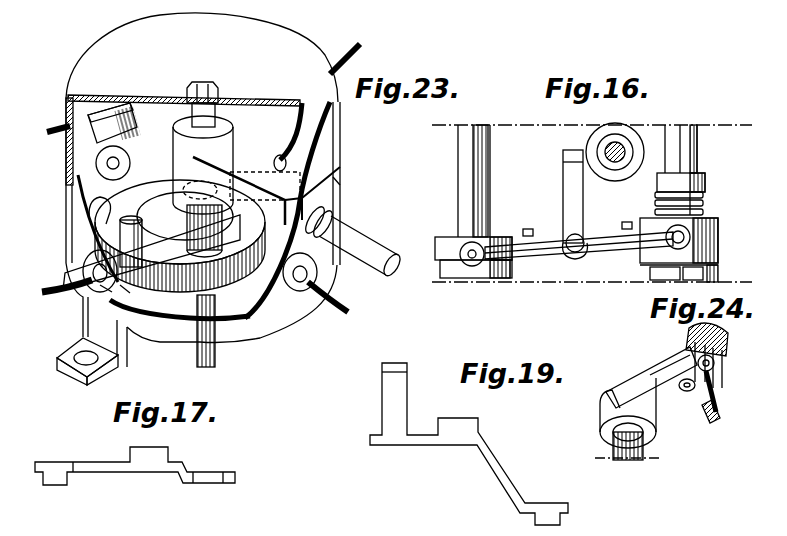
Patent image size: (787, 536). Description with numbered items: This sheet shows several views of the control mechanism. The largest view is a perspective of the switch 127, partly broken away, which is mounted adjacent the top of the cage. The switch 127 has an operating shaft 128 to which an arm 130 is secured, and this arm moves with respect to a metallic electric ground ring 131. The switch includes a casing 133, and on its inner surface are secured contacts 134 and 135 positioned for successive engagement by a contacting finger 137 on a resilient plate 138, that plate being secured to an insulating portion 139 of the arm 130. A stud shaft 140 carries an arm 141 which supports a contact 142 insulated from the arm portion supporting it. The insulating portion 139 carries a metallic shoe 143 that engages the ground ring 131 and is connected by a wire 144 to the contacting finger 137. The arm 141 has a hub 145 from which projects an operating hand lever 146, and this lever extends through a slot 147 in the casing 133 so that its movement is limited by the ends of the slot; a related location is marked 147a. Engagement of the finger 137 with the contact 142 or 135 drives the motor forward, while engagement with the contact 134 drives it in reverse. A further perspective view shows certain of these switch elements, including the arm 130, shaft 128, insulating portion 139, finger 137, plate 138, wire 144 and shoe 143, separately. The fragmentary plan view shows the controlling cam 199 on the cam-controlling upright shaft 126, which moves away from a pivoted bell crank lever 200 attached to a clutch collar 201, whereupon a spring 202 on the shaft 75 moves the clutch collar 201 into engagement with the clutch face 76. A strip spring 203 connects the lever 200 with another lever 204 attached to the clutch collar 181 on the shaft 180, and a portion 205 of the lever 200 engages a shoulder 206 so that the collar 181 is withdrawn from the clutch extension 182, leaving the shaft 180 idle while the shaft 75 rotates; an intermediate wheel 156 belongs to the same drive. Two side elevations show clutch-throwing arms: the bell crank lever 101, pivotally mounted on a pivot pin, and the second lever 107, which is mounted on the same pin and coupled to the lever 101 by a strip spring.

In FIG. 23, the switch 127 is at (68, 262).
In FIG. 23, the operating shaft 128 is at (216, 353).
In FIG. 24, the operating shaft 128 is at (645, 455).
In FIG. 23, the arm 130 is at (207, 230).
In FIG. 24, the arm 130 is at (663, 413).
In FIG. 23, the ground ring 131 is at (228, 292).
In FIG. 23, the casing 133 is at (68, 163).
In FIG. 23, the contact 134 is at (270, 240).
In FIG. 23, the contact 135 is at (93, 230).
In FIG. 23, the contacting finger 137 is at (88, 207).
In FIG. 24, the contacting finger 137 is at (684, 335).
In FIG. 23, the resilient plate 138 is at (85, 297).
In FIG. 24, the resilient plate 138 is at (715, 367).
In FIG. 23, the insulating portion 139 is at (143, 231).
In FIG. 24, the insulating portion 139 is at (673, 376).
In FIG. 23, the stud shaft 140 is at (221, 103).
In FIG. 23, the arm 141 is at (255, 153).
In FIG. 23, the contact 142 is at (282, 150).
In FIG. 23, the metallic shoe 143 is at (133, 288).
In FIG. 24, the metallic shoe 143 is at (714, 417).
In FIG. 23, the wire 144 is at (112, 290).
In FIG. 24, the wire 144 is at (696, 388).
In FIG. 23, the hub 145 is at (173, 150).
In FIG. 23, the operating hand lever 146 is at (333, 207).
In FIG. 23, the slot 147 is at (335, 178).
In FIG. 23, the handle extension 147a is at (334, 218).
In FIG. 23, the intermediate wheel 156 is at (128, 106).
In FIG. 16, the shaft 75 is at (697, 143).
In FIG. 16, the clutch face 76 is at (646, 280).
In FIG. 16, the cam-controlling upright shaft 126 is at (618, 148).
In FIG. 16, the shaft 180 is at (477, 147).
In FIG. 16, the clutch collar 181 is at (447, 240).
In FIG. 16, the clutch extension 182 is at (455, 279).
In FIG. 16, the cam 199 is at (603, 172).
In FIG. 16, the bell crank lever 200 is at (563, 183).
In FIG. 16, the clutch collar 201 is at (718, 226).
In FIG. 16, the spring 202 is at (705, 200).
In FIG. 16, the strip spring 203 is at (602, 247).
In FIG. 16, the lever 204 is at (532, 252).
In FIG. 16, the portion 205 is at (567, 262).
In FIG. 16, the shoulder 206 is at (567, 240).
In FIG. 19, the bell crank lever 101 is at (500, 465).
In FIG. 17, the lever 107 is at (162, 472).